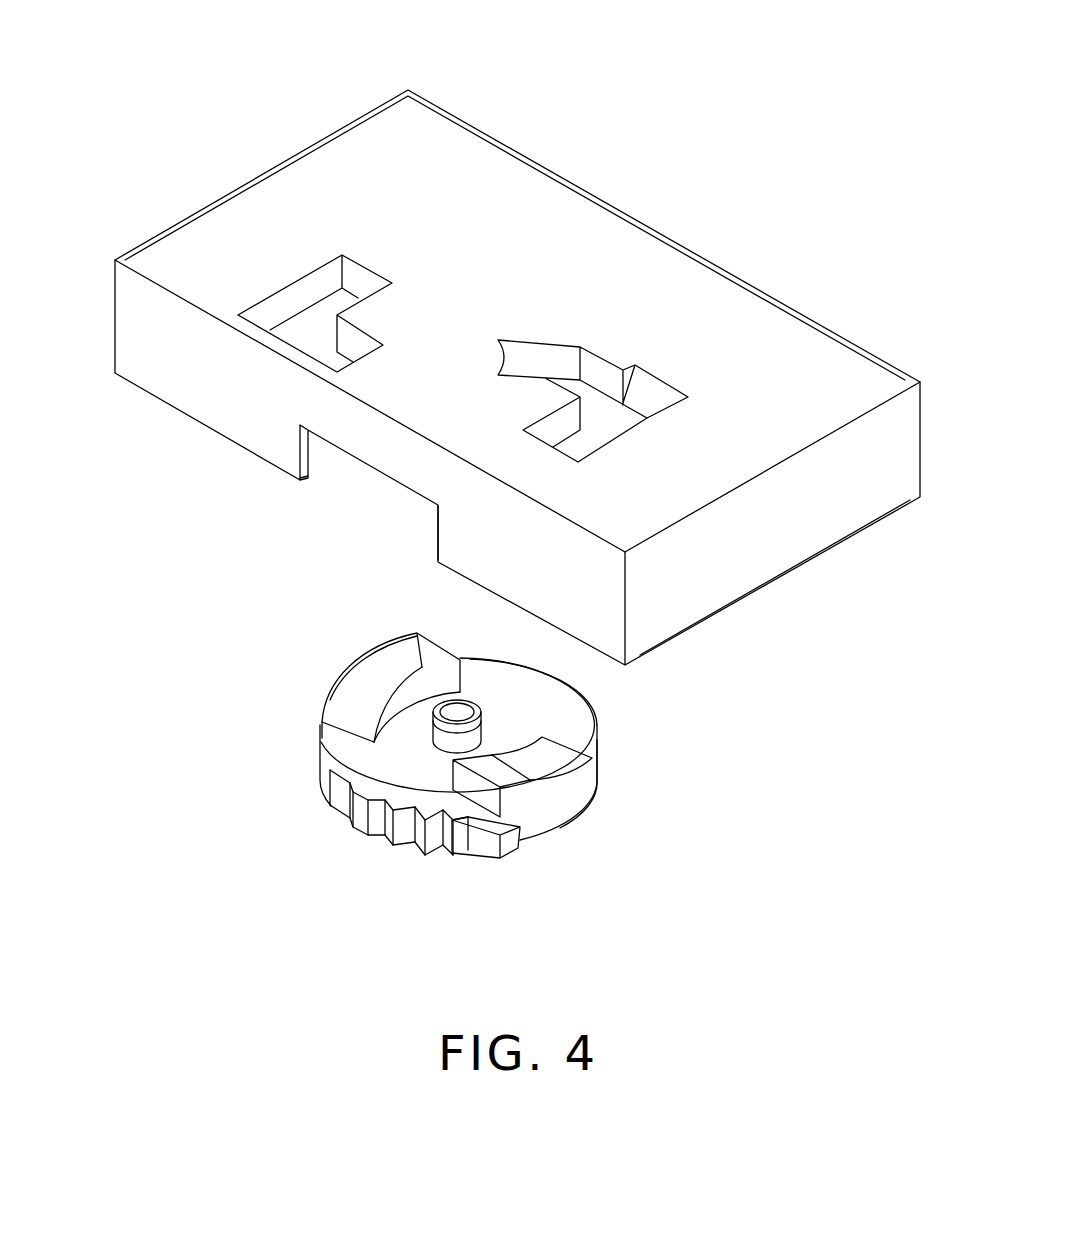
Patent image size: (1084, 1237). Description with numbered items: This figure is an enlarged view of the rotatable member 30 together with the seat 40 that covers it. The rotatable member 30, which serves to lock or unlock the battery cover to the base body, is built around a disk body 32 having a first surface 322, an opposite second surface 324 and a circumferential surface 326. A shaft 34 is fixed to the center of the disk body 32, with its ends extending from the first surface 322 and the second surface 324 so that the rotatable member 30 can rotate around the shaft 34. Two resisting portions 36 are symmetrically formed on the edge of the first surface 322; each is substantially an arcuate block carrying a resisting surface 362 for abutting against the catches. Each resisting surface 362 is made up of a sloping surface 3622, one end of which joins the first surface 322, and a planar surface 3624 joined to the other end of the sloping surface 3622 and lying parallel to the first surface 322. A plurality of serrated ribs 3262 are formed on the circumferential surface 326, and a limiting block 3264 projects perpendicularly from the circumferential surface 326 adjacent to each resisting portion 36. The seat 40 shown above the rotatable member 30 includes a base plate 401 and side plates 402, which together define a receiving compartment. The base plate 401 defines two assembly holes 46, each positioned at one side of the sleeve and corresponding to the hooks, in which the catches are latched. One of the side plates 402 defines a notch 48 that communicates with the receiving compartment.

The seat 40 is at (280, 96).
The base plate 401 is at (518, 203).
The side plates 402 is at (717, 570).
The assembly holes 46 is at (300, 327).
The notch 48 is at (353, 488).
The rotatable member 30 is at (432, 764).
The disk body 32 is at (333, 734).
The first surface 322 is at (583, 726).
The second surface 324 is at (575, 820).
The circumferential surface 326 is at (583, 780).
The shaft 34 is at (440, 742).
The resisting portions 36 is at (419, 764).
The resisting surface 362 is at (281, 667).
The sloping surface 3622 is at (357, 687).
The planar surface 3624 is at (413, 648).
The serrated ribs 3262 is at (397, 837).
The limiting block 3264 is at (508, 860).